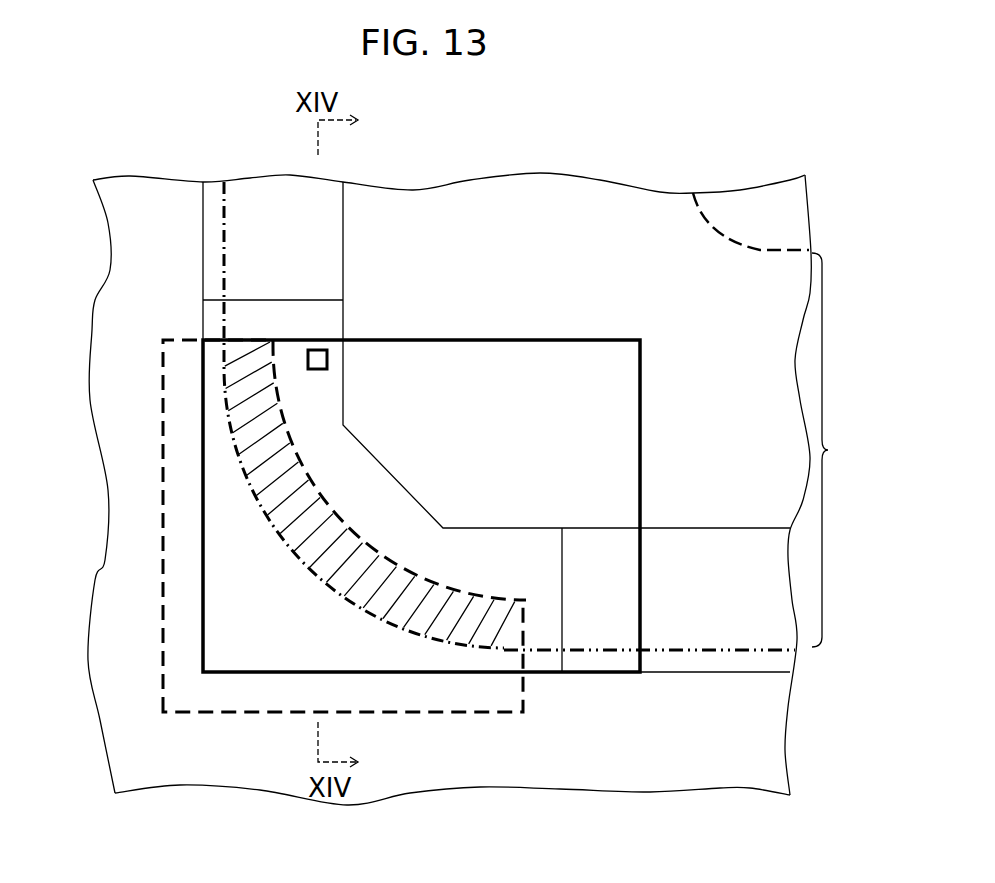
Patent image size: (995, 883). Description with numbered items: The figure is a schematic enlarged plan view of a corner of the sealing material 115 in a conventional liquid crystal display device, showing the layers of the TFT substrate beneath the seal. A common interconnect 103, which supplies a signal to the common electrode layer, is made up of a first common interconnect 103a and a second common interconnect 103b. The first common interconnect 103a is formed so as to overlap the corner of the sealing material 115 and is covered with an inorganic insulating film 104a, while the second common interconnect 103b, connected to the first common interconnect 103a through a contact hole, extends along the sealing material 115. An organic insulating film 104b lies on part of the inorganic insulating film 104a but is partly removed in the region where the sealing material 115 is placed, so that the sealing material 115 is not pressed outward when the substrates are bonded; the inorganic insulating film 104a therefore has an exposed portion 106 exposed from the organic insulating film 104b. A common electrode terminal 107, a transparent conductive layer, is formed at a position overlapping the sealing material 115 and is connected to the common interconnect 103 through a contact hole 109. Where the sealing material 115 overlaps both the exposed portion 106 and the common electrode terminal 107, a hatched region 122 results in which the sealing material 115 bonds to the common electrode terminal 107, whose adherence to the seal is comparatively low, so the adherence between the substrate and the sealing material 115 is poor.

The common interconnect 103 is at (509, 480).
The first common interconnect 103a is at (492, 662).
The second common interconnect 103b is at (698, 660).
The inorganic insulating film 104a is at (210, 693).
The organic insulating film 104b is at (773, 740).
The exposed portion 106 is at (344, 599).
The common electrode terminal 107 is at (507, 355).
The contact hole 109 is at (313, 353).
The sealing material 115 is at (846, 450).
The region 122 is at (265, 467).